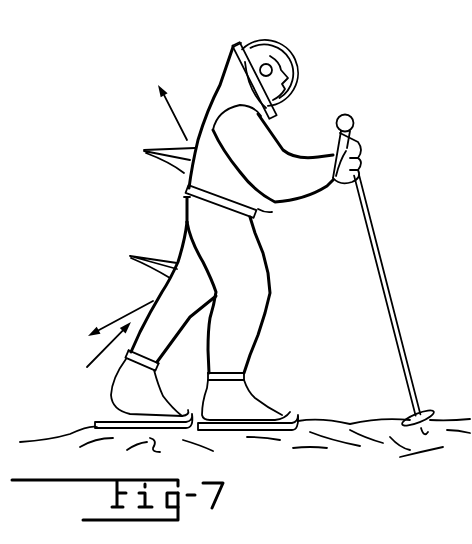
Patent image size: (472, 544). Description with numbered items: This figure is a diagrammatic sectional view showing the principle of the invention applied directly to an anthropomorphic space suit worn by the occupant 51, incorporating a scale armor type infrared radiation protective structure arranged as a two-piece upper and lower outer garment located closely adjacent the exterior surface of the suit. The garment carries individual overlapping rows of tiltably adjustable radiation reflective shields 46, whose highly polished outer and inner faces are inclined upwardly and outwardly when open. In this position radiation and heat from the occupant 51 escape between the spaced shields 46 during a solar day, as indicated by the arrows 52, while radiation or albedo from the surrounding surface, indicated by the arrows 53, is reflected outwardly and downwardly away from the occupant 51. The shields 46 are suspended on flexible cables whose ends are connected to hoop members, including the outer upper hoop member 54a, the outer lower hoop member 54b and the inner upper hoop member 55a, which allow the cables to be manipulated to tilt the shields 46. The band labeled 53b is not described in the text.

The radiation reflective shields 46 is at (151, 209).
The occupant 51 is at (240, 270).
The arrows 52 is at (178, 108).
The arrows 53 is at (107, 342).
The cuff band 53b is at (127, 357).
The upper hoop member 54a is at (243, 46).
The lower hoop member 54b is at (130, 368).
The upper hoop member 55a is at (234, 46).